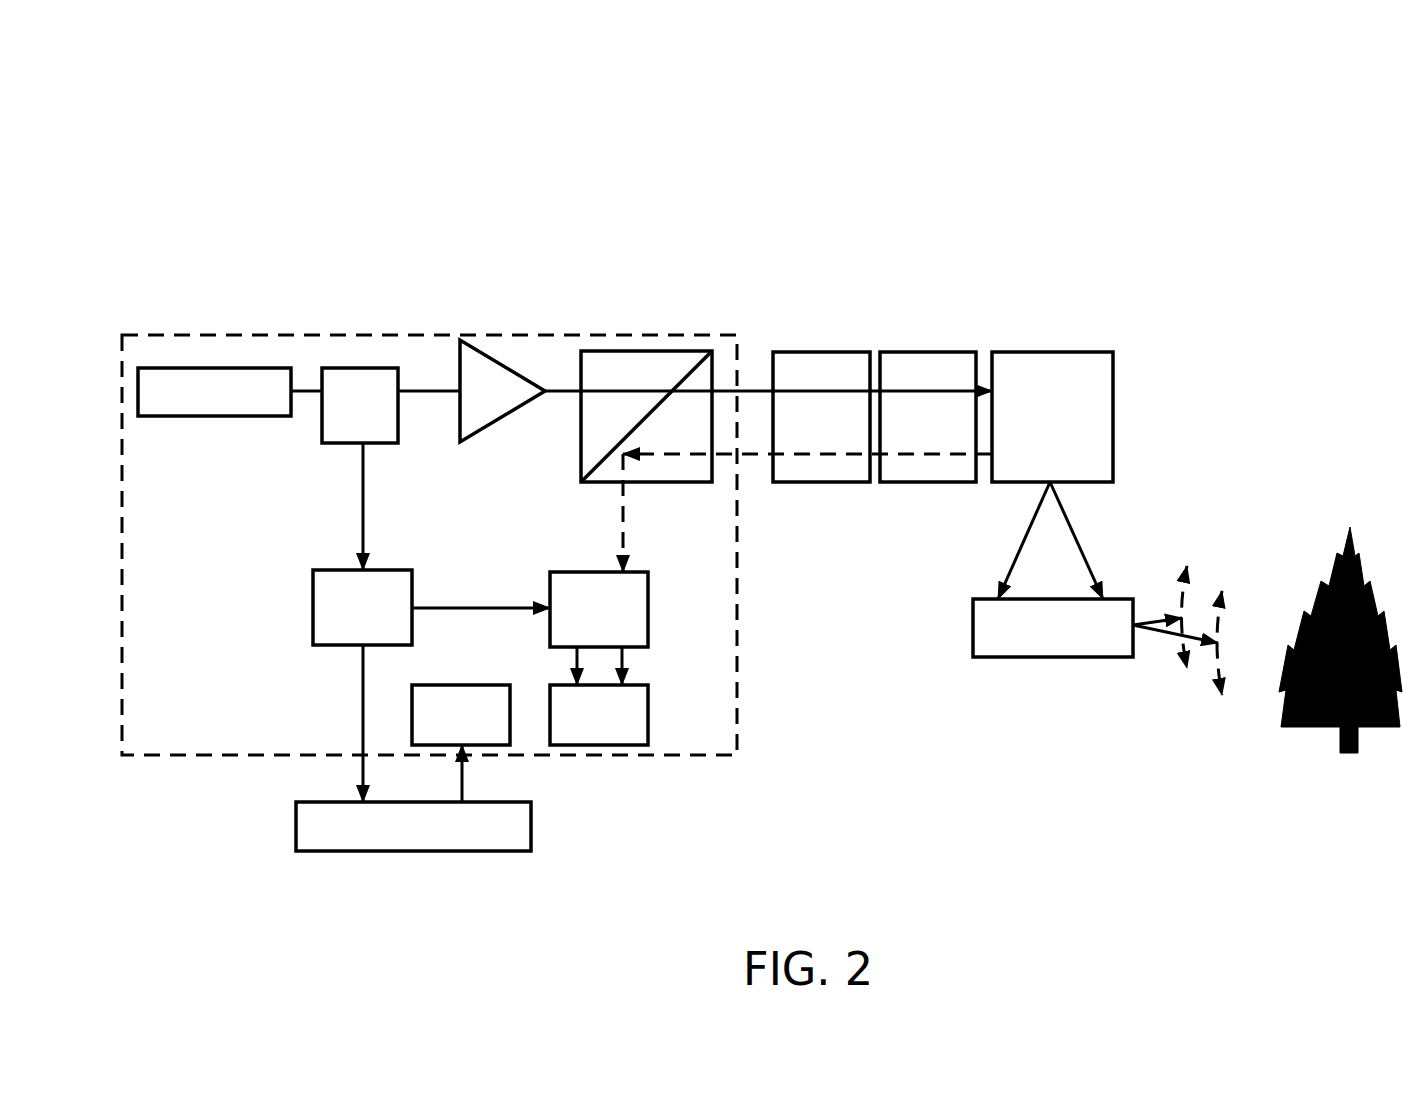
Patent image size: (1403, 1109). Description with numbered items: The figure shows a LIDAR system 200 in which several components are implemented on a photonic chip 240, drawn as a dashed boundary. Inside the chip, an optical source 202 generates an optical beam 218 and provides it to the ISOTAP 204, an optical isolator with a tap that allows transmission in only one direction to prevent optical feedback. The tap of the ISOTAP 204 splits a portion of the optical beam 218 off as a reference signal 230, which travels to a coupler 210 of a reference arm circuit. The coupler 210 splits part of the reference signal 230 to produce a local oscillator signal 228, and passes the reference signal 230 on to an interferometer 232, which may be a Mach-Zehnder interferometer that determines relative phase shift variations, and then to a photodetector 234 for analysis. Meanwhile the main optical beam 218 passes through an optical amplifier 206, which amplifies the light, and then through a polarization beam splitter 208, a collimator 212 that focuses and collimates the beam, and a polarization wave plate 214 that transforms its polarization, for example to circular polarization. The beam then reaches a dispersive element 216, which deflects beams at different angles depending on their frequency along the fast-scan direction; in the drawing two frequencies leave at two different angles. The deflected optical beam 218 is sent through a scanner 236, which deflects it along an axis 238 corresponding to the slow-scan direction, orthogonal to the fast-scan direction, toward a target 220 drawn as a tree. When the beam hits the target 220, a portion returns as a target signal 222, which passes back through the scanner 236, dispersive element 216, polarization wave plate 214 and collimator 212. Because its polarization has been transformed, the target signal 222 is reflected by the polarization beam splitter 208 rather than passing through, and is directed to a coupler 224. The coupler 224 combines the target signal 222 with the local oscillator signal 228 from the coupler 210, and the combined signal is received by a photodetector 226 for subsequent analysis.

The LIDAR system 200 is at (175, 125).
The optical source 202 is at (257, 362).
The ISOTAP 204 is at (322, 435).
The optical amplifier 206 is at (453, 340).
The polarization beam splitter (PBS) 208 is at (610, 348).
The coupler 210 is at (313, 605).
The collimator 212 is at (798, 348).
The polarization wave plate (PWP) 214 is at (905, 348).
The dispersive element 216 is at (1043, 348).
The optical beam 218 is at (1022, 542).
The target 220 is at (1337, 732).
The target signal 222 is at (627, 518).
The coupler 224 is at (648, 613).
The photodetector 226 is at (648, 712).
The local oscillator (LO) signal 228 is at (520, 600).
The reference signal 230 is at (360, 512).
The interferometer 232 is at (510, 838).
The photodetector 234 is at (510, 735).
The scanner 236 is at (1119, 641).
The axis 238 is at (1210, 697).
The photonic chip 240 is at (322, 749).